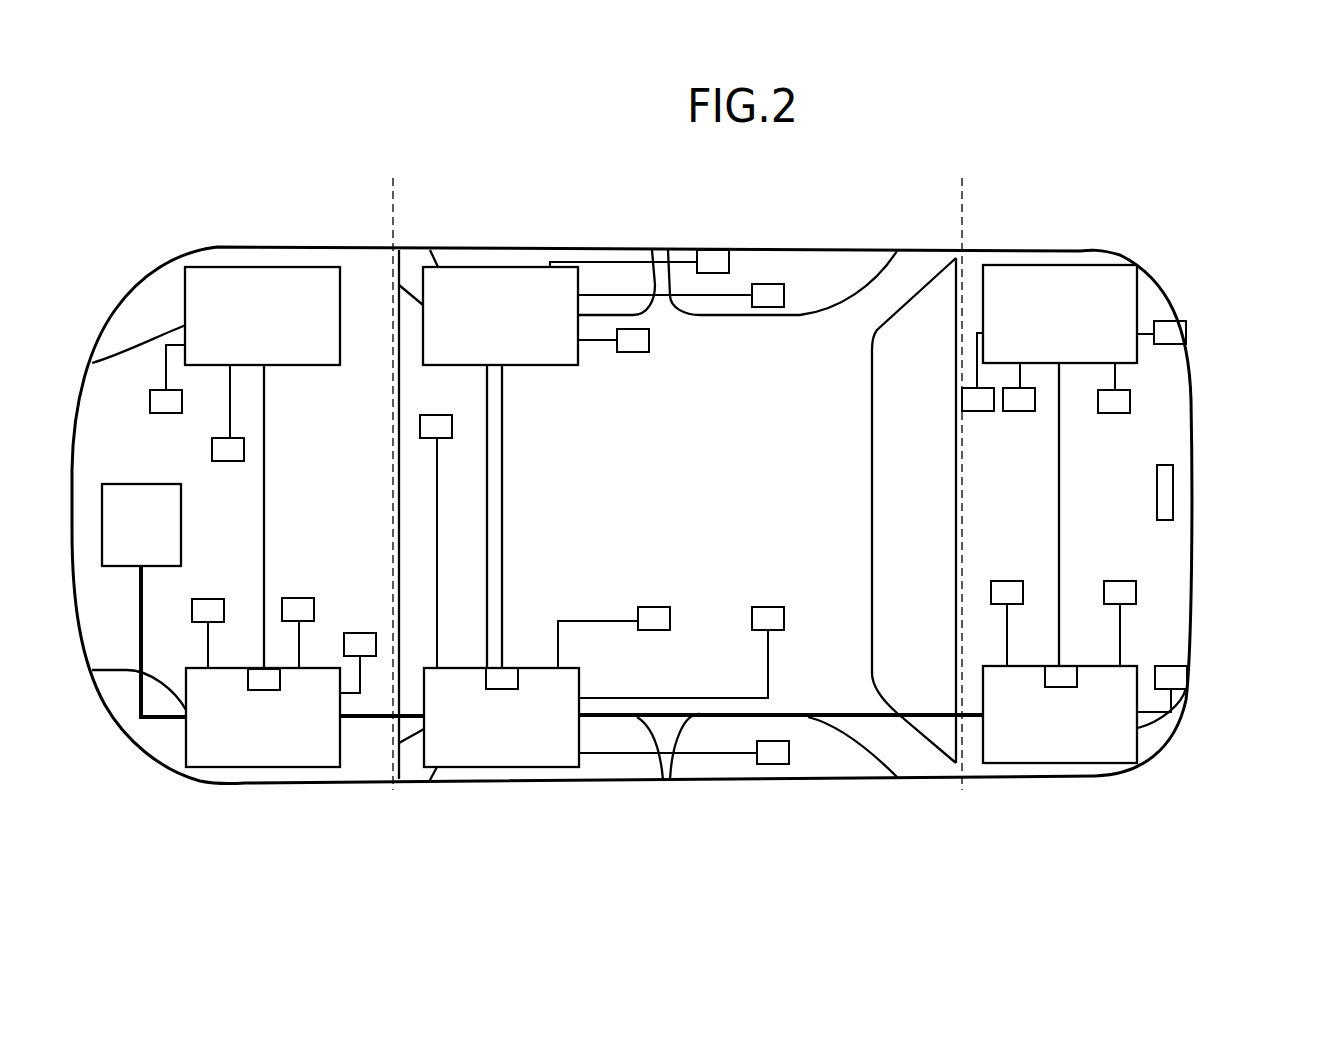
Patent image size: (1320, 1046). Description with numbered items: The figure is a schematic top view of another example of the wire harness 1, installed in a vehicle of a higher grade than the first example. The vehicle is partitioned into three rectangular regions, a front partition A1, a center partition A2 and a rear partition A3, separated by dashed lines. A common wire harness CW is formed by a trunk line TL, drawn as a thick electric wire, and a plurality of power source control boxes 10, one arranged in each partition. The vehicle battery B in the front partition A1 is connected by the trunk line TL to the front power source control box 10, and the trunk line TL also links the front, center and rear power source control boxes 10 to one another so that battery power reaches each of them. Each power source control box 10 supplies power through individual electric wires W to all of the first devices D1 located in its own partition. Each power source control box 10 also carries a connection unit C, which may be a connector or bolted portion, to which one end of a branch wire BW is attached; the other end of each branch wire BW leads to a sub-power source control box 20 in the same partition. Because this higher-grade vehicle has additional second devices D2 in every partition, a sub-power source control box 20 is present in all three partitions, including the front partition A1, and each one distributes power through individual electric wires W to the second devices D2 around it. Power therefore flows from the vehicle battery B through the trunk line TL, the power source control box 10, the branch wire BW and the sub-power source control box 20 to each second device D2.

The wire harness 1 is at (1186, 199).
The power source control box 10 is at (210, 767).
The sub-power source control box 20 is at (220, 267).
The front partition A1 is at (385, 205).
The center partition A2 is at (402, 205).
The rear partition A3 is at (970, 203).
The vehicle battery B is at (102, 516).
The branch wire BW is at (503, 483).
The connection unit C is at (260, 669).
The common wire harness CW is at (662, 770).
The first device D1 is at (210, 599).
The second device D2 is at (150, 401).
The trunk line TL is at (142, 720).
The individual electric wire W is at (166, 373).